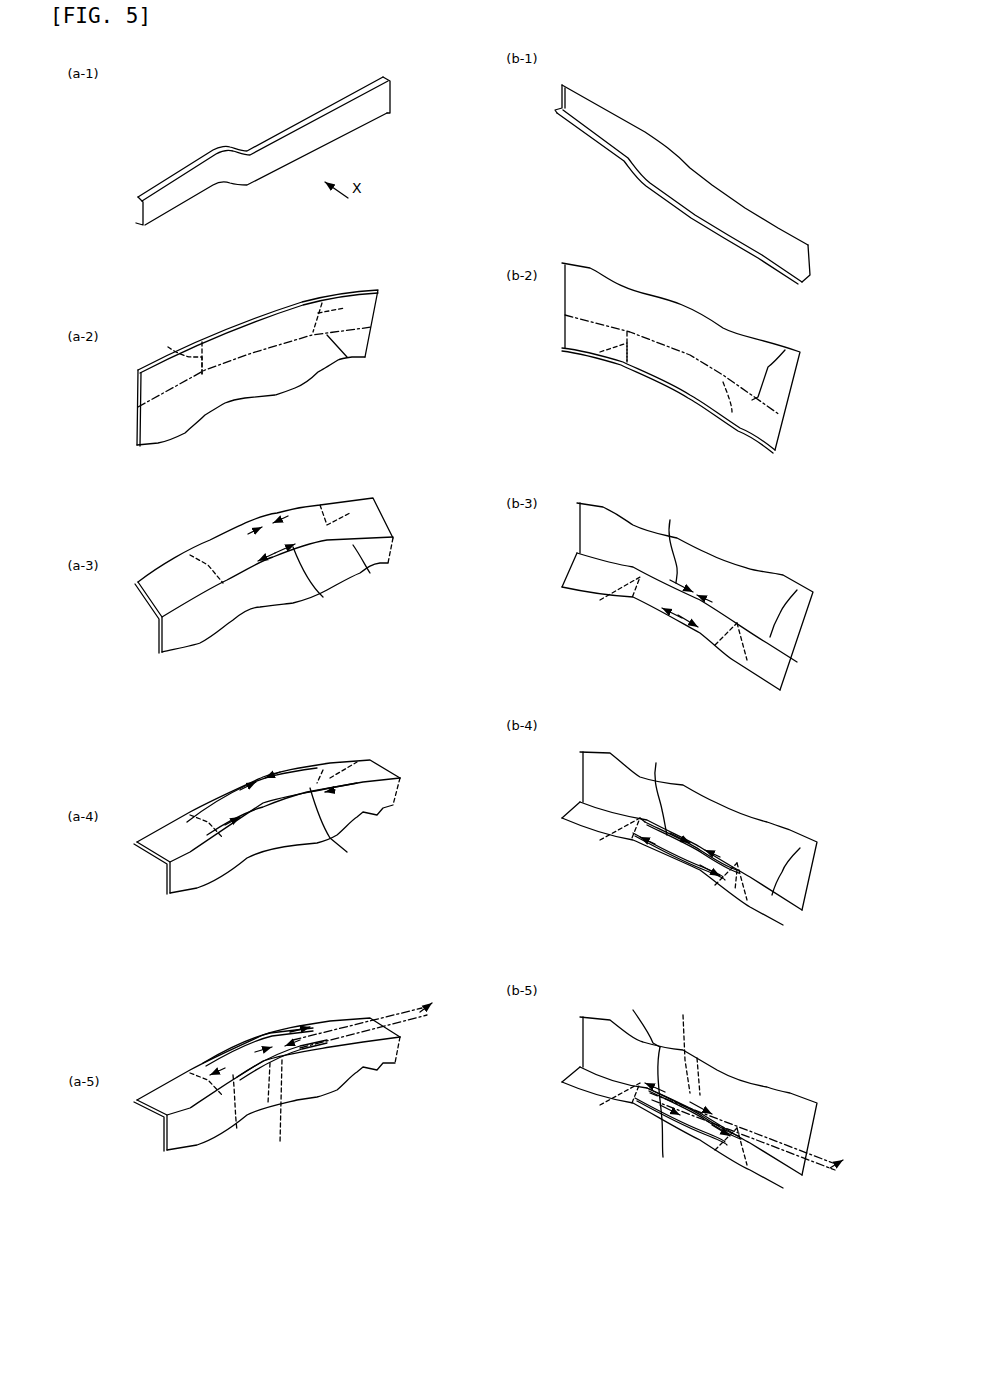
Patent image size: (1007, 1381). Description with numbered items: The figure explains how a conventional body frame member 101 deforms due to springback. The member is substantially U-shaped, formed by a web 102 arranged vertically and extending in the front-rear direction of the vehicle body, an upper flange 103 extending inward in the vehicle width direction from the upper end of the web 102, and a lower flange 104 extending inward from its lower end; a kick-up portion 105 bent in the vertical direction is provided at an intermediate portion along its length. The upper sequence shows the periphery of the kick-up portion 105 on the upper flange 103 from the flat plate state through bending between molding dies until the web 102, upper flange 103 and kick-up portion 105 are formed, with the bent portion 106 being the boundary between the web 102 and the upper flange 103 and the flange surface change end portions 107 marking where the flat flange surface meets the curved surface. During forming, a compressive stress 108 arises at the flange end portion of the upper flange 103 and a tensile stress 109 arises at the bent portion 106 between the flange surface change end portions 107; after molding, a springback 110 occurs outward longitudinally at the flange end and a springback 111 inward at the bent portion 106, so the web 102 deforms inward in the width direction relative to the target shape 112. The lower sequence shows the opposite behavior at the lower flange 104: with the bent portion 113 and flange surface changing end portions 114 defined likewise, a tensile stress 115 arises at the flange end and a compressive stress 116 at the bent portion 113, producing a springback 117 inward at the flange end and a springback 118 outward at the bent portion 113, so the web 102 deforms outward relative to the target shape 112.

The body frame member 101 is at (397, 92).
The web 102 is at (177, 202).
The upper flange 103 is at (150, 195).
The lower flange 104 is at (137, 223).
The kick-up portion 105 is at (243, 146).
The bent portion 106 is at (347, 358).
The flange surface change end portion 107 is at (168, 347).
The compressive stress 108 is at (280, 512).
The tensile stress 109 is at (323, 597).
The springback 110 is at (265, 1030).
The springback 111 is at (237, 1131).
The target shape 112 is at (280, 1130).
The bent portion 113 is at (785, 350).
The flange surface changing end portion 114 is at (602, 352).
The tensile stress 115 is at (675, 622).
The compressive stress 116 is at (670, 522).
The springback 117 is at (663, 1157).
The springback 118 is at (633, 1010).